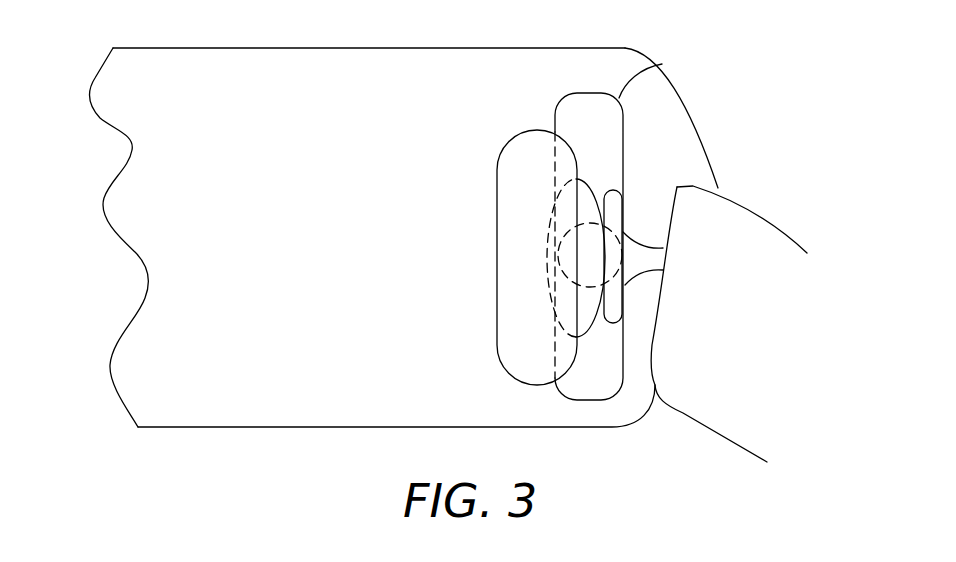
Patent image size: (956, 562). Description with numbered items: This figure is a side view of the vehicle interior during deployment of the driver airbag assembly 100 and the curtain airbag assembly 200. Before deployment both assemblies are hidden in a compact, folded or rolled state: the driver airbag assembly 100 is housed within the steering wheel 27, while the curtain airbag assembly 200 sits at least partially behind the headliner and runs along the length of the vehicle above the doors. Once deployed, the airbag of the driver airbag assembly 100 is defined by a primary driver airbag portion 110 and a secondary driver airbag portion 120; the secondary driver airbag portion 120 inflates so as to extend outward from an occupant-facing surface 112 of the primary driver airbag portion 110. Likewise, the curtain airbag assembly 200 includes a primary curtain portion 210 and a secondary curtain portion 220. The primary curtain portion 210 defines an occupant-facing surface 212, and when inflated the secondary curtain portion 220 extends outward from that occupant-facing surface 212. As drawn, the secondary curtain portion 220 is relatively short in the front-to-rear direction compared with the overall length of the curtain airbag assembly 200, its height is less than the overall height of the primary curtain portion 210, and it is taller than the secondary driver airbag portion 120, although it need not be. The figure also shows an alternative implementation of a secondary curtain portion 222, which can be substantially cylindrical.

The curtain airbag assembly 200 is at (722, 93).
The occupant-facing surface 212 is at (503, 58).
The primary curtain portion 210 is at (625, 57).
The secondary curtain portion 220 is at (662, 64).
The driver airbag assembly 100 is at (464, 372).
The secondary driver airbag portion 120 is at (498, 208).
The primary driver airbag portion 110 is at (589, 187).
The occupant-facing surface 112 is at (547, 249).
The secondary curtain portion 222 is at (613, 280).
The steering wheel 27 is at (615, 212).